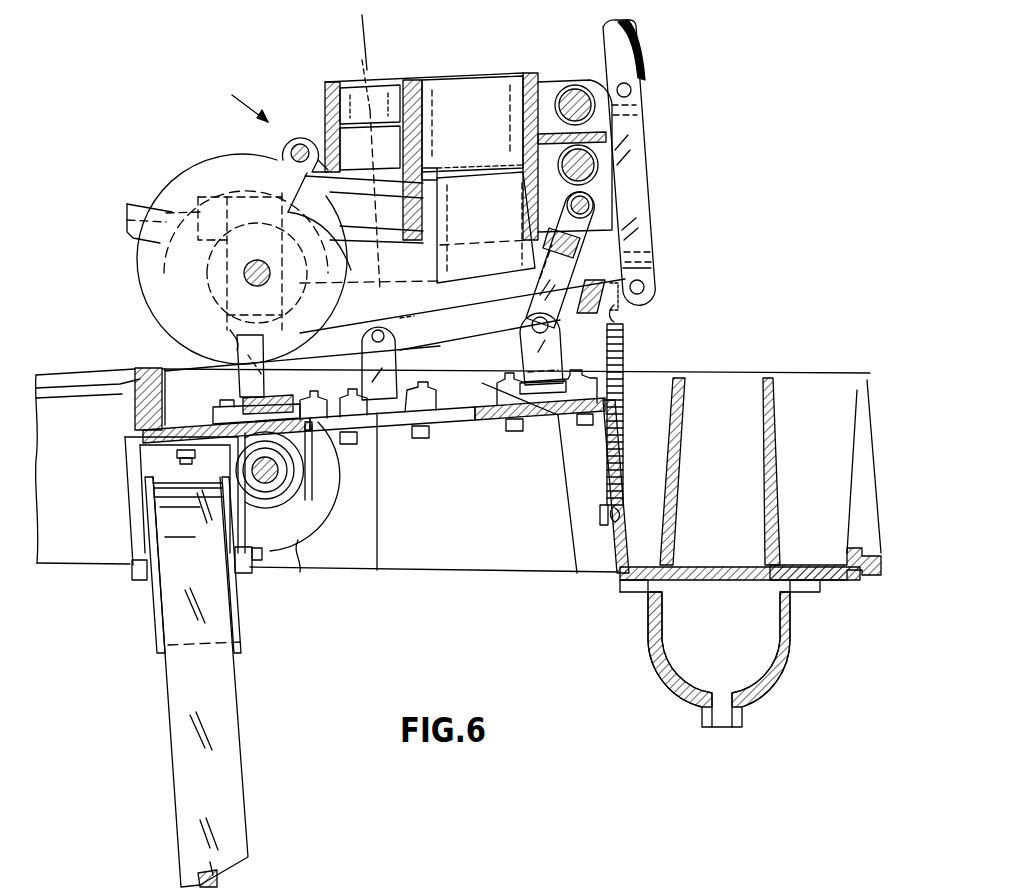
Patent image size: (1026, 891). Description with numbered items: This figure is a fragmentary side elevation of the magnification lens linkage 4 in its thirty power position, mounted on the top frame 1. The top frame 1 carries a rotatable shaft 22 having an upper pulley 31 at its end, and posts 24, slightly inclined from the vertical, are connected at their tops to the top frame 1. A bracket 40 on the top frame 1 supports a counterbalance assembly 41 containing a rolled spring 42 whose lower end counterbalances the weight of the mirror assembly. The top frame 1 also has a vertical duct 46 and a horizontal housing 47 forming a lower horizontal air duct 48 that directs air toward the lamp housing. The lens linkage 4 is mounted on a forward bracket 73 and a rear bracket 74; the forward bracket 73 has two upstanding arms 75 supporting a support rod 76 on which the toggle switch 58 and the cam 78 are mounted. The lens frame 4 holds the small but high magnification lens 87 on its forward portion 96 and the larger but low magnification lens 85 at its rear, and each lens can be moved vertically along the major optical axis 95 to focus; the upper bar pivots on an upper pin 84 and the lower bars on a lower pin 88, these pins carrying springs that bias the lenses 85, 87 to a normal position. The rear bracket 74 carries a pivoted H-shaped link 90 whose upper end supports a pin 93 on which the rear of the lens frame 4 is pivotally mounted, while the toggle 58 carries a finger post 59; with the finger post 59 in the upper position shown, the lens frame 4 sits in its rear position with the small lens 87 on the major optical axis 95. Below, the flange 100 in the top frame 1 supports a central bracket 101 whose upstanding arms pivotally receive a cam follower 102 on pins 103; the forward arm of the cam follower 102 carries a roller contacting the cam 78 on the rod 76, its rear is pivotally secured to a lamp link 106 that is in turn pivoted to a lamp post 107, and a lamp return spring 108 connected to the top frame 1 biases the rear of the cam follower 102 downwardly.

The top frame 1 is at (66, 548).
The magnification lens linkage 4 is at (236, 99).
The rotatable shaft 22 is at (272, 480).
The shafts or posts 24 is at (182, 866).
The upper pulley 31 is at (300, 578).
The bracket 40 is at (127, 488).
The counterbalance assembly 41 is at (152, 614).
The rolled spring 42 is at (232, 735).
The vertical duct 46 is at (683, 468).
The horizontal housing 47 is at (656, 634).
The lower horizontal air duct 48 is at (758, 650).
The toggle switch 58 is at (185, 180).
The finger post 59 is at (132, 203).
The forward bracket 73 is at (242, 395).
The rear bracket 74 is at (553, 358).
The upstanding arms 75 is at (244, 358).
The support rod 76 is at (245, 274).
The cam 78 is at (402, 265).
The upper pin 84 is at (590, 65).
The magnification lens 85 is at (470, 178).
The high magnification lens 87 is at (398, 150).
The lower pin 88 is at (596, 172).
The H-shaped link 90 is at (566, 268).
The pin 93 is at (592, 214).
The major optical axis 95 is at (372, 44).
The forward portion 96 is at (325, 99).
The flange 100 is at (493, 416).
The central bracket 101 is at (390, 368).
The cam follower 102 is at (472, 337).
The pins 103 is at (378, 326).
The lamp link 106 is at (648, 160).
The lamp post 107 is at (642, 46).
The lamp return spring 108 is at (628, 367).